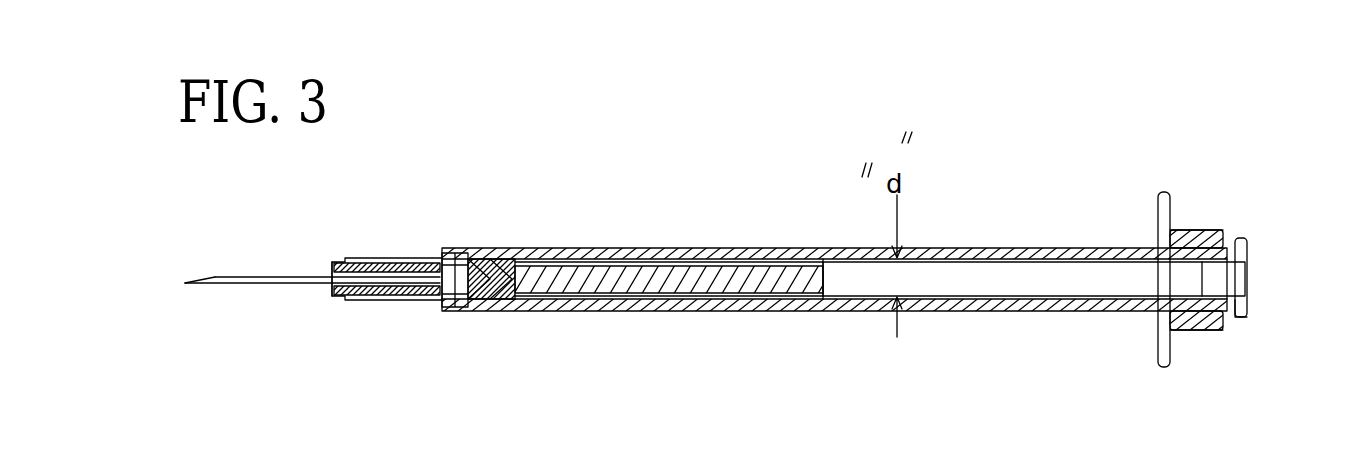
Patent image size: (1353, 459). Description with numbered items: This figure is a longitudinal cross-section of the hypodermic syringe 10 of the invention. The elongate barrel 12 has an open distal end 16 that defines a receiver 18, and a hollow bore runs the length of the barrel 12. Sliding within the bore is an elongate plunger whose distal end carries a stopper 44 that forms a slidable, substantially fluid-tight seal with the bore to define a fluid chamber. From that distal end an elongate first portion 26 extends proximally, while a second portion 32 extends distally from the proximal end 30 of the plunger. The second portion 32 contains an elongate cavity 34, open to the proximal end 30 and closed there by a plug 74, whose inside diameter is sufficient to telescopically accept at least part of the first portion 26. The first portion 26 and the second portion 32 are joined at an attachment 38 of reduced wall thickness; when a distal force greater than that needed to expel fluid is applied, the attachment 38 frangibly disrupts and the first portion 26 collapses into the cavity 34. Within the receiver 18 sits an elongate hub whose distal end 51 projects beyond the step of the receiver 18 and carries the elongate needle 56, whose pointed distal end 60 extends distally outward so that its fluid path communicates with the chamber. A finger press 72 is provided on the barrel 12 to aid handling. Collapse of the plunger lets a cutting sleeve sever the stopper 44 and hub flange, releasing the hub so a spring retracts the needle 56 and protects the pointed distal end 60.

The hypodermic syringe 10 is at (1100, 114).
The barrel 12 is at (1058, 246).
The distal end 16 is at (1205, 232).
The receiver 18 is at (400, 257).
The first portion 26 is at (697, 277).
The proximal end 30 is at (1240, 318).
The second portion 32 is at (947, 250).
The elongate cavity 34 is at (960, 278).
The attachment 38 is at (815, 257).
The stopper 44 is at (510, 250).
The distal end of hub 51 is at (337, 268).
The needle 56 is at (270, 274).
The pointed distal end 60 is at (185, 282).
The finger press 72 is at (1172, 195).
The plug 74 is at (1248, 258).